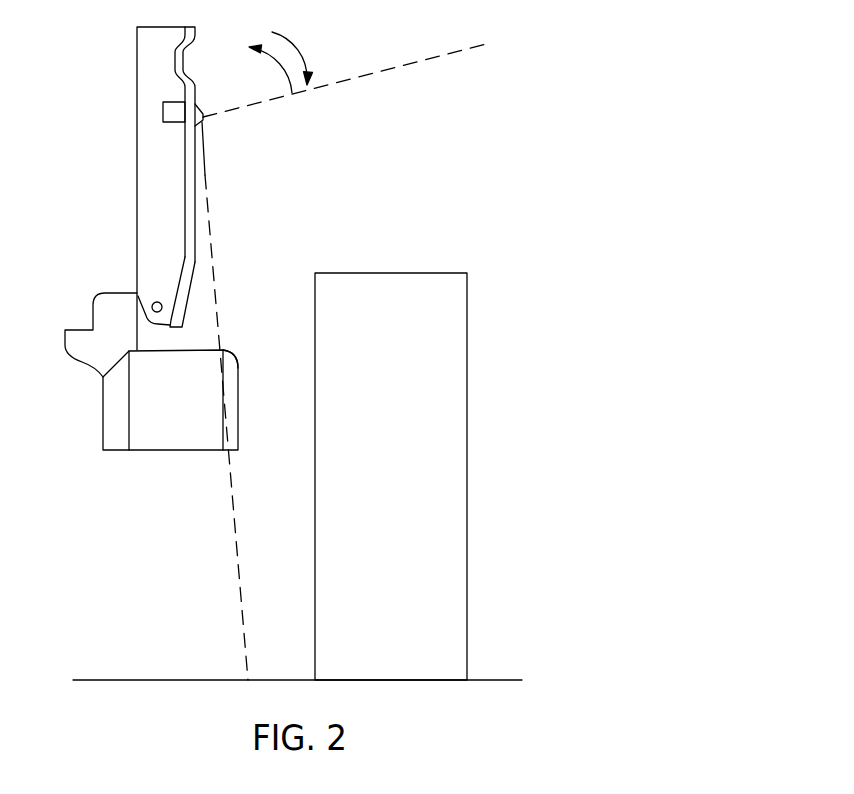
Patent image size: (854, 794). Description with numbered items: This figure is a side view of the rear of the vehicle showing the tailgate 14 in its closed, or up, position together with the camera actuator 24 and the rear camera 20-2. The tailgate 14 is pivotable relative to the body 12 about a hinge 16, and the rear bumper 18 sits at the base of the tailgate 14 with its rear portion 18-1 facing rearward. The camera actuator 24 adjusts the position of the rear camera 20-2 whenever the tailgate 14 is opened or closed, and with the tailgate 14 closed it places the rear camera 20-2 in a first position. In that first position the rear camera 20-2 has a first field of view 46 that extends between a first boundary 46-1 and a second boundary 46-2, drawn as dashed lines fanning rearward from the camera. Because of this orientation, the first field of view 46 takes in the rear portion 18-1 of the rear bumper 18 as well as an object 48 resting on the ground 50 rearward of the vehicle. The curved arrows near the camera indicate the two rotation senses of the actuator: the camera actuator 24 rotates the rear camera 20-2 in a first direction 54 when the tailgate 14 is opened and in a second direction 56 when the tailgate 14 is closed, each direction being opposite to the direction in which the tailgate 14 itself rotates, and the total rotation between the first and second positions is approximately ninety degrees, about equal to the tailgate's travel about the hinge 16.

The body 12 is at (122, 292).
The tailgate 14 is at (157, 52).
The hinge 16 is at (152, 307).
The rear bumper 18 is at (175, 422).
The rear portion 18-1 is at (234, 352).
The rear camera 20-2 is at (204, 120).
The camera actuator 24 is at (163, 110).
The first field of view 46 is at (500, 442).
The first boundary 46-1 is at (236, 563).
The second boundary 46-2 is at (492, 43).
The object 48 is at (392, 272).
The ground 50 is at (503, 680).
The first direction 54 is at (281, 61).
The second direction 56 is at (292, 44).